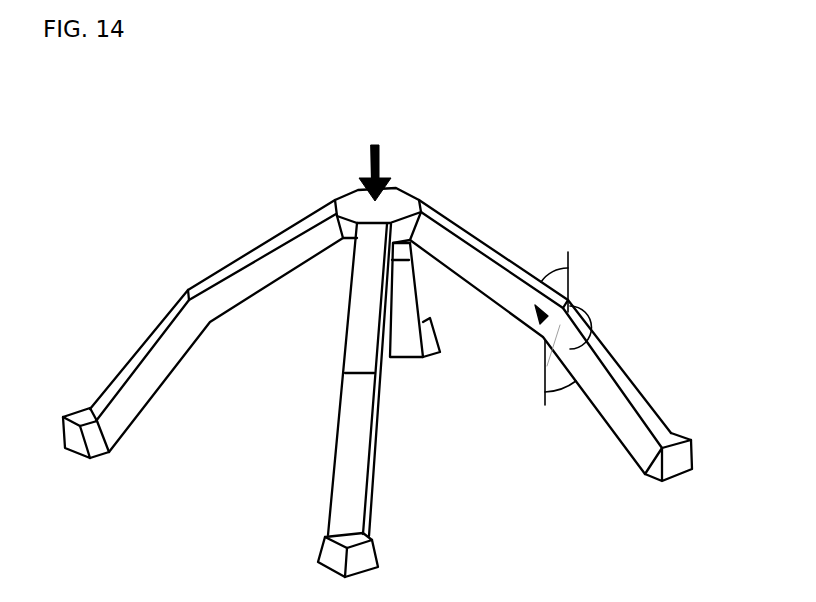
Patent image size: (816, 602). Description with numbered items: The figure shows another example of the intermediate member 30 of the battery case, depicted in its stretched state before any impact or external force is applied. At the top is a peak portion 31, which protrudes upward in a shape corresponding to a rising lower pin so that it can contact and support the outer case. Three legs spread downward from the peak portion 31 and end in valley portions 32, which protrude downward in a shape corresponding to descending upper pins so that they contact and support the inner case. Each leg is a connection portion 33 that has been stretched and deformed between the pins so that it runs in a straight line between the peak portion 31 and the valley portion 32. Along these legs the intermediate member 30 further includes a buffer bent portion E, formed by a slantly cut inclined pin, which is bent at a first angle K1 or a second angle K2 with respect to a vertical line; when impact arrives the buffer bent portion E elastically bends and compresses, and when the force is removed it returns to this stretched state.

The intermediate member 30 is at (143, 133).
The peak portion 31 is at (354, 203).
The valley portion 32 is at (83, 417).
The connection portion 33 is at (210, 324).
The buffer bent portion E is at (188, 290).
The first angle K1 is at (564, 372).
The second angle K2 is at (550, 277).